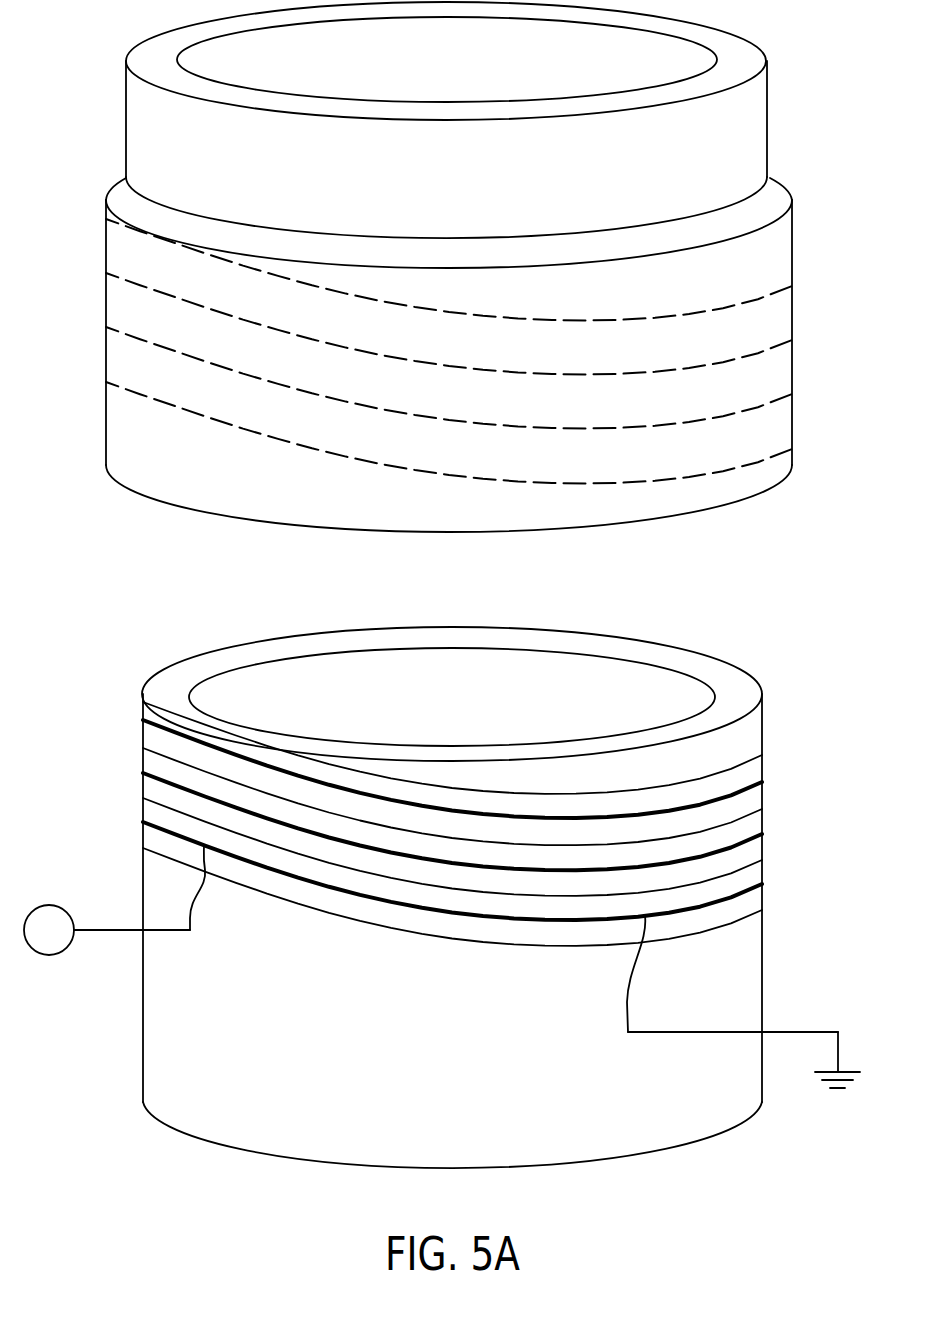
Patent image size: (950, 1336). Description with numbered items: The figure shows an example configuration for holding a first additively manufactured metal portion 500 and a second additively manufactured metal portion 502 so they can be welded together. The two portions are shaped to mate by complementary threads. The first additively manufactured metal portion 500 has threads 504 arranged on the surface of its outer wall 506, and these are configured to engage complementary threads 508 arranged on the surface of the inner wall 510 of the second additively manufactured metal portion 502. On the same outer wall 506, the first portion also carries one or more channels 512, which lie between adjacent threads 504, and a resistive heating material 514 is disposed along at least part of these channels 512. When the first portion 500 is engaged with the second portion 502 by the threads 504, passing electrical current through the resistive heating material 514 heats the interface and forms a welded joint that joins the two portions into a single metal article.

The first additively manufactured metal portion 500 is at (442, 897).
The second additively manufactured metal portion 502 is at (472, 267).
The threads 504 is at (774, 753).
The outer wall 506 is at (263, 1071).
The complementary threads 508 is at (802, 284).
The inner wall 510 is at (478, 93).
The channels 512 is at (420, 839).
The resistive heating material 514 is at (412, 914).